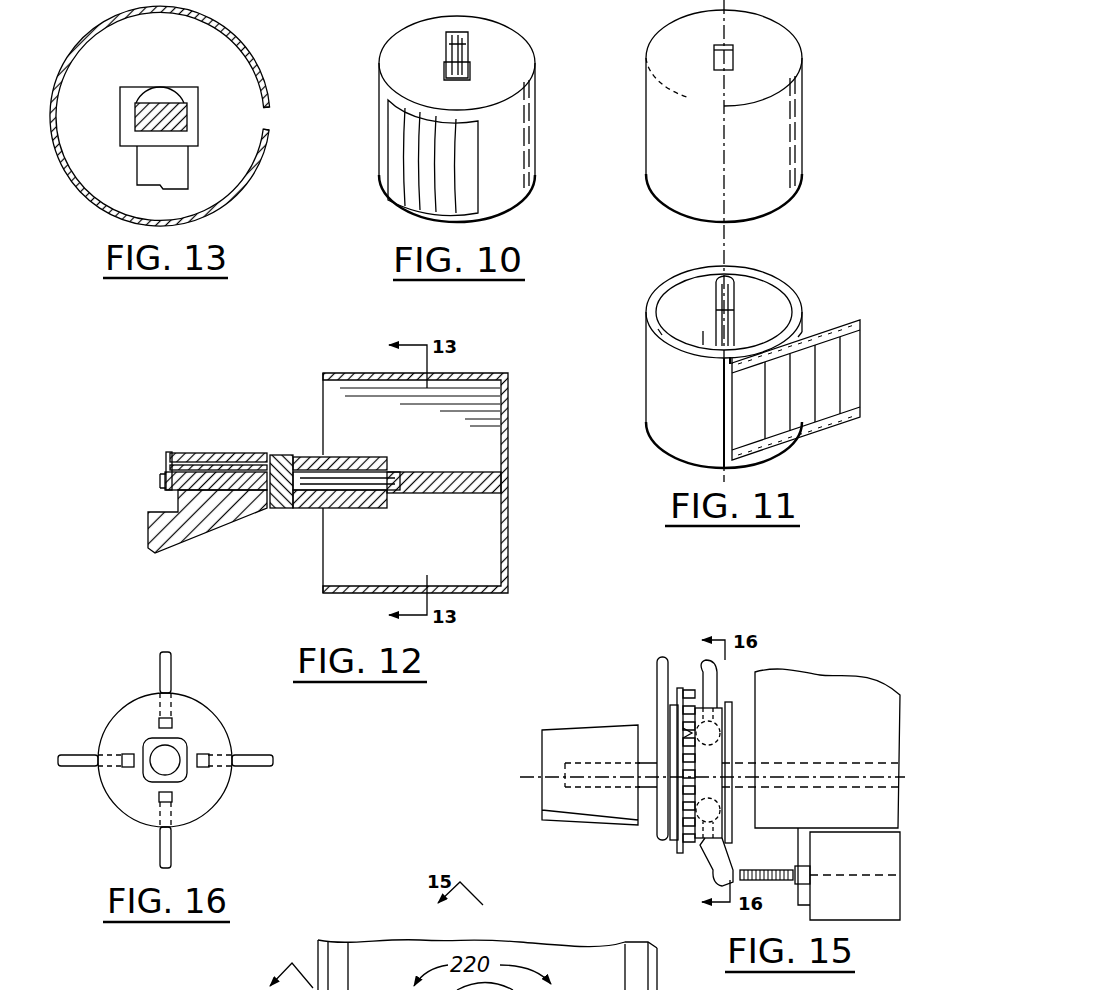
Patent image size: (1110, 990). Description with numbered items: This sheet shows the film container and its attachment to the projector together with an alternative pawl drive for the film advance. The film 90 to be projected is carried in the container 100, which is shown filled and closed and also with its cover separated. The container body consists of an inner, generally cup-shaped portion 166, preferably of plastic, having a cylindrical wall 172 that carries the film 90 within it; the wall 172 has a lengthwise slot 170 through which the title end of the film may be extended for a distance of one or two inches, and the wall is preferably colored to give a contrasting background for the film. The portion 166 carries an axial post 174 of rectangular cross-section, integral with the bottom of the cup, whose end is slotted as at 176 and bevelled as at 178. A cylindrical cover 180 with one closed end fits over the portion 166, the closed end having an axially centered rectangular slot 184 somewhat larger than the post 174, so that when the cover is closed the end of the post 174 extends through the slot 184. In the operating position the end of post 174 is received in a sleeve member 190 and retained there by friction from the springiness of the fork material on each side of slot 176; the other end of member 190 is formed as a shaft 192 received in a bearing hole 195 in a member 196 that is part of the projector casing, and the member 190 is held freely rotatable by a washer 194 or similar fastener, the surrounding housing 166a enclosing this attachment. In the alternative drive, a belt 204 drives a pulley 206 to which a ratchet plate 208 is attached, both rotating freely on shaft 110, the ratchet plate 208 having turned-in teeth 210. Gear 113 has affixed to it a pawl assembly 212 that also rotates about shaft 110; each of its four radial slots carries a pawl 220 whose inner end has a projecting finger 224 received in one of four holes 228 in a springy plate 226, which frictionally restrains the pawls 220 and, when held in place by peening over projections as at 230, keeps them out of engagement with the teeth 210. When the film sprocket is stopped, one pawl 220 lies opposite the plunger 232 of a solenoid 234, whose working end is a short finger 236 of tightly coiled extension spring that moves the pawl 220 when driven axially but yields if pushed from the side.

In FIG. 10, the film 90 is at (392, 197).
In FIG. 11, the film 90 is at (802, 408).
In FIG. 10, the container 100 is at (540, 139).
In FIG. 15, the shaft 110 is at (880, 758).
In FIG. 15, the gear 113 is at (728, 702).
In FIG. 11, the cup-shaped portion 166 is at (636, 404).
In FIG. 13, the cartridge housing 166a is at (245, 44).
In FIG. 12, the cartridge housing 166a is at (463, 373).
In FIG. 13, the lengthwise slot 170 is at (264, 118).
In FIG. 11, the lengthwise slot 170 is at (732, 358).
In FIG. 11, the cylindrical wall 172 is at (798, 337).
In FIG. 13, the axial post 174 is at (183, 119).
In FIG. 10, the axial post 174 is at (464, 72).
In FIG. 11, the axial post 174 is at (660, 330).
In FIG. 12, the axial post 174 is at (436, 497).
In FIG. 11, the slot 176 is at (703, 331).
In FIG. 12, the slot 176 is at (350, 456).
In FIG. 10, the bevel 178 is at (468, 42).
In FIG. 11, the bevel 178 is at (735, 292).
In FIG. 12, the bevel 178 is at (313, 492).
In FIG. 11, the cover 180 is at (783, 117).
In FIG. 11, the rectangular slot 184 is at (731, 59).
In FIG. 12, the sleeve member 190 is at (290, 453).
In FIG. 12, the shaft 192 is at (192, 462).
In FIG. 12, the washer 194 is at (166, 462).
In FIG. 12, the bearing hole 195 is at (221, 465).
In FIG. 12, the member 196 is at (200, 520).
In FIG. 15, the belt 204 is at (658, 672).
In FIG. 15, the pulley 206 is at (652, 828).
In FIG. 15, the ratchet plate 208 is at (675, 853).
In FIG. 15, the turned-in teeth 210 is at (687, 733).
In FIG. 16, the pawl assembly 212 is at (197, 754).
In FIG. 15, the pawl assembly 212 is at (695, 707).
In FIG. 16, the pawl 220 is at (260, 754).
In FIG. 15, the pawl 220 is at (713, 662).
In FIG. 16, the projecting finger 224 is at (200, 768).
In FIG. 16, the springy plate 226 is at (197, 812).
In FIG. 16, the holes 228 is at (137, 765).
In FIG. 16, the peened projection 230 is at (185, 741).
In FIG. 15, the plunger 232 is at (800, 868).
In FIG. 15, the solenoid 234 is at (885, 912).
In FIG. 15, the finger 236 is at (758, 868).